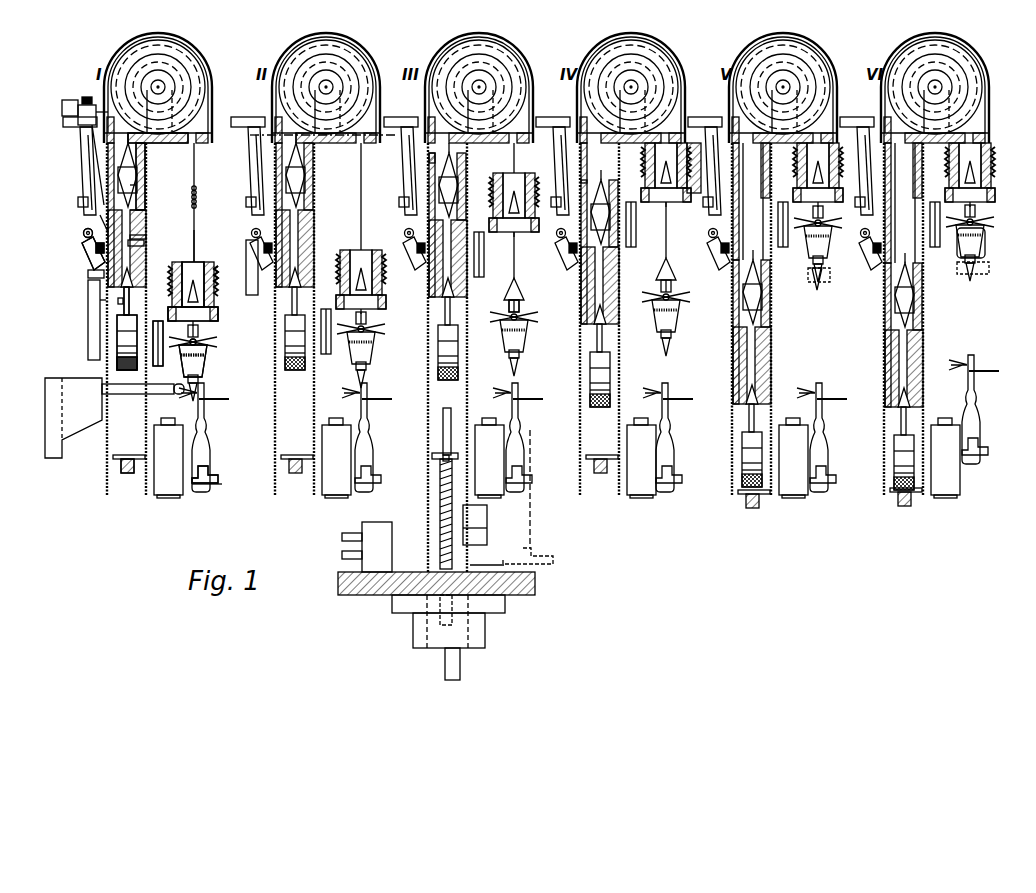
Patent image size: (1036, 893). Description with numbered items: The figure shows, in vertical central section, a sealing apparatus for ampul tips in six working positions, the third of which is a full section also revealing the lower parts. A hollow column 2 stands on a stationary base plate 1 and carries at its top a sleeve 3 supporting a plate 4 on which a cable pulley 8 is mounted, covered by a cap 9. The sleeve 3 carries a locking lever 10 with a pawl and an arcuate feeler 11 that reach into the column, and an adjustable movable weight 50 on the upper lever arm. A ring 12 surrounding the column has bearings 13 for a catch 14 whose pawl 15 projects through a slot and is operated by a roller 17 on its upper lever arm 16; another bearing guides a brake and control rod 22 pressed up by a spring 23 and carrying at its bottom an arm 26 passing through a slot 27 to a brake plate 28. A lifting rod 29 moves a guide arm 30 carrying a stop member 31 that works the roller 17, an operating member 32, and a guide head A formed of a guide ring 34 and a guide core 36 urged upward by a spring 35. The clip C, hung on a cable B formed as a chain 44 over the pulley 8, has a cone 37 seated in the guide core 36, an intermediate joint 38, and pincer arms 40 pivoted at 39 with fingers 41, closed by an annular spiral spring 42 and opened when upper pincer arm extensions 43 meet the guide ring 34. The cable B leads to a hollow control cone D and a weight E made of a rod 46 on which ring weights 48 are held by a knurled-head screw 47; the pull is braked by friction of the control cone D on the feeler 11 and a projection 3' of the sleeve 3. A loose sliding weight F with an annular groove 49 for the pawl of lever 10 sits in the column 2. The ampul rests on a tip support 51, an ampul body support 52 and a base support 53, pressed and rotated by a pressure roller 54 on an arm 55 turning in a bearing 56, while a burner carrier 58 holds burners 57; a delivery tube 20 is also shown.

The base plate 1 is at (513, 597).
The hollow column 2 is at (106, 462).
The sleeve 3 is at (152, 176).
The projection 3' is at (150, 181).
The plate 4 is at (172, 143).
The cable pulley 8 is at (211, 98).
The cap 9 is at (212, 118).
The locking lever 10 is at (92, 126).
The arcuate feeler 11 is at (104, 195).
The ring 12 is at (142, 246).
The bearings 13 is at (96, 250).
The catch 14 is at (90, 262).
The pawl 15 is at (94, 282).
The upper lever arm 16 is at (104, 228).
The roller 17 is at (84, 234).
The delivery tube 20 is at (814, 276).
The brake and control rod 22 is at (443, 433).
The spring 23 is at (441, 508).
The arm 26 is at (126, 473).
The slot 27 is at (440, 484).
The brake plate 28 is at (126, 455).
The lifting rod 29 is at (445, 665).
The guide arm 30 is at (100, 324).
The stop member 31 is at (88, 306).
The operating member 32 is at (156, 366).
The guide ring 34 is at (214, 320).
The spring 35 is at (214, 276).
The guide core 36 is at (188, 266).
The cone 37 is at (516, 292).
The intermediate joint 38 is at (509, 304).
The pivot 39 is at (522, 318).
The pincer arms 40 is at (194, 347).
The fingers 41 is at (205, 377).
The annular spiral spring 42 is at (207, 352).
The upper pincer arm extensions 43 is at (190, 342).
The chain 44 is at (197, 192).
The rod 46 is at (116, 301).
The knurled-head screw 47 is at (117, 365).
The ring weights 48 is at (127, 342).
The annular groove 49 is at (146, 210).
The movable weight 50 is at (70, 117).
The tip support 51 is at (214, 400).
The ampul body support 52 is at (212, 474).
The base support 53 is at (206, 486).
The pressure roller 54 is at (157, 490).
The arm 55 is at (488, 534).
The bearing 56 is at (489, 562).
The burners 57 is at (170, 394).
The burner carrier 58 is at (74, 384).
The guide head A is at (206, 284).
The cable B is at (196, 240).
The clip C is at (199, 363).
The control cone D is at (127, 251).
The weight E is at (132, 301).
The sliding weight F is at (146, 238).